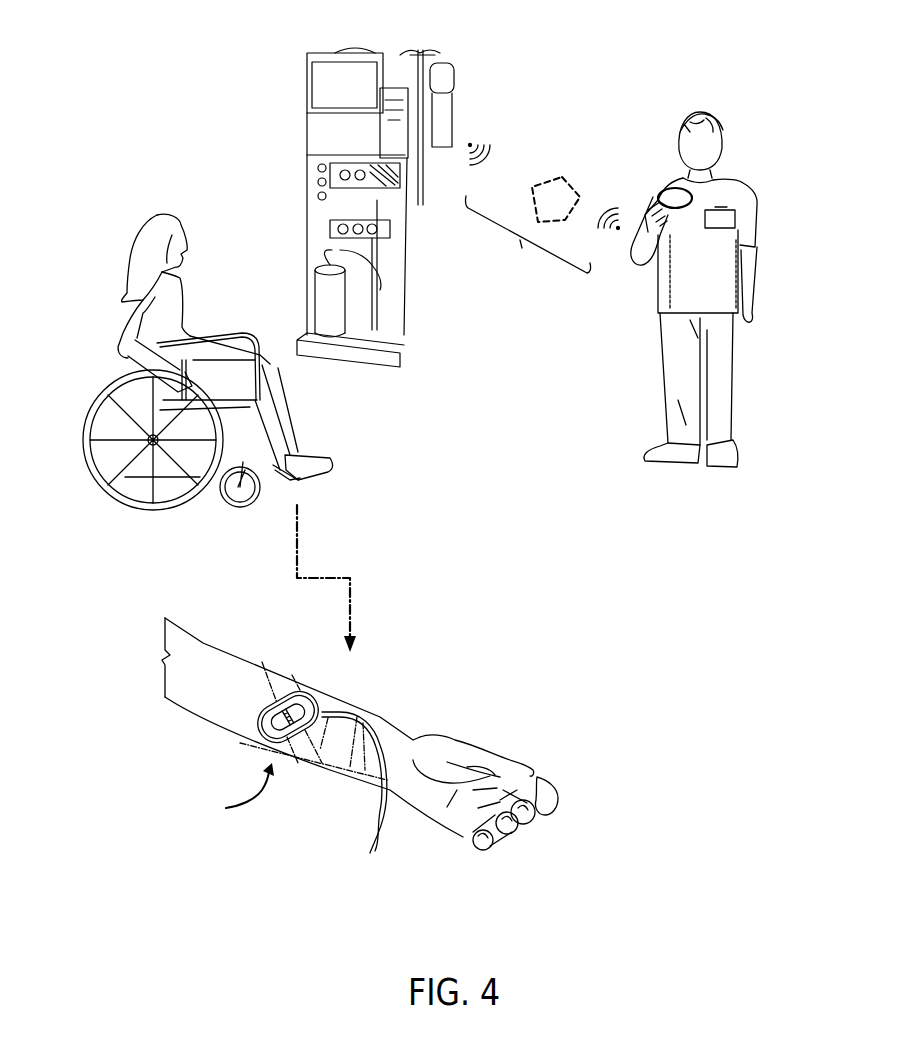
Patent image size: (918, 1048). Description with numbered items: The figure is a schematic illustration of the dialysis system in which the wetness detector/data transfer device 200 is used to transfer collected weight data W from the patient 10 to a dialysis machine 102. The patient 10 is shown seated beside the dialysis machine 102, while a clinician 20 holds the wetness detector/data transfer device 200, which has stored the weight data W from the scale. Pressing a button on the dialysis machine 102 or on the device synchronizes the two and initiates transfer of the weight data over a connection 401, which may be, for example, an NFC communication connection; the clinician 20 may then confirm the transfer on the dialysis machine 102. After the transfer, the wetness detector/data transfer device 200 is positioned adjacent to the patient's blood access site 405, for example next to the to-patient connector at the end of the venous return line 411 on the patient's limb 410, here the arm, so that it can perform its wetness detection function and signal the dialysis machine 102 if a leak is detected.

The patient 10 is at (110, 333).
The clinician 20 is at (752, 212).
The dialysis machine 102 is at (306, 73).
The wetness detector/data transfer device 200 is at (663, 190).
The connection 401 is at (543, 218).
The blood access site 405 is at (242, 801).
The limb 410 is at (238, 653).
The venous return line 411 is at (383, 837).